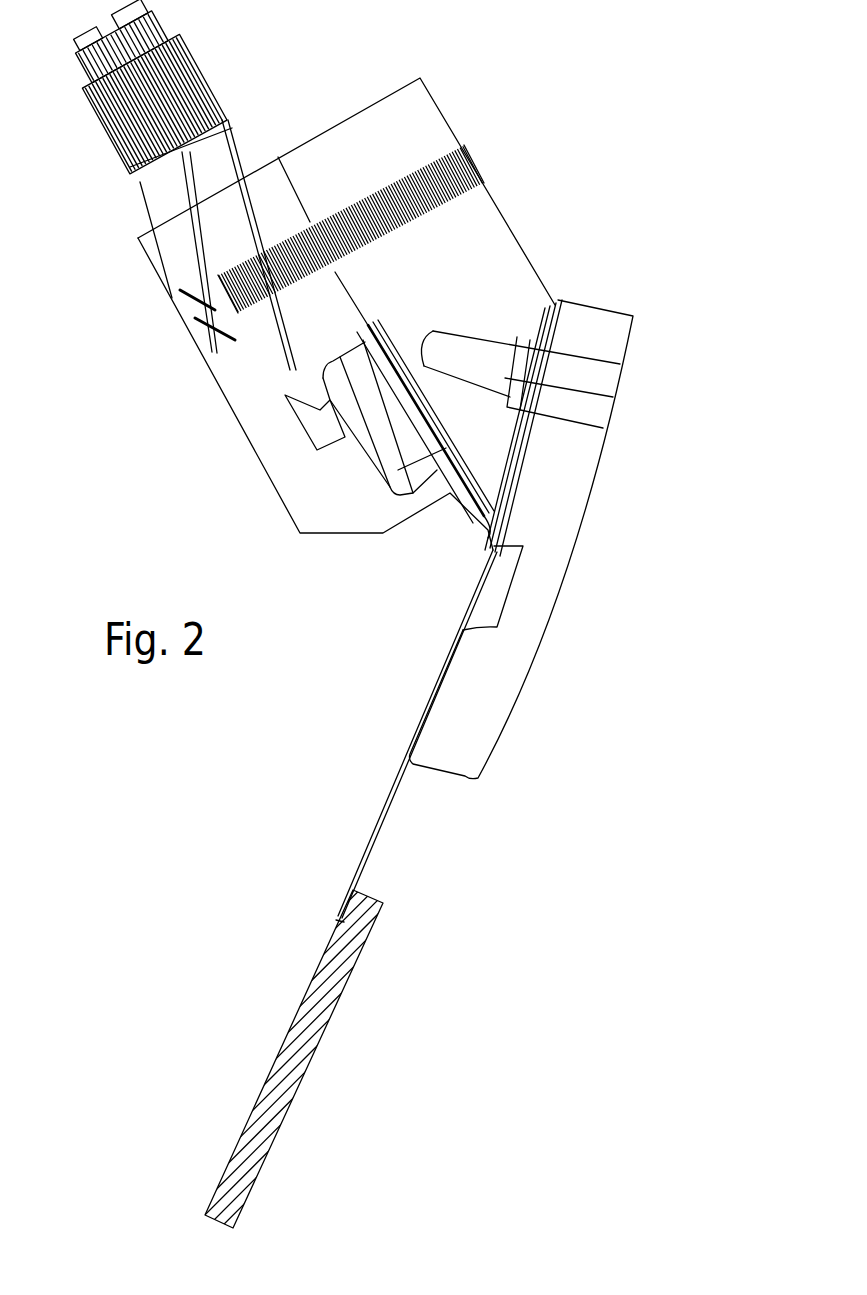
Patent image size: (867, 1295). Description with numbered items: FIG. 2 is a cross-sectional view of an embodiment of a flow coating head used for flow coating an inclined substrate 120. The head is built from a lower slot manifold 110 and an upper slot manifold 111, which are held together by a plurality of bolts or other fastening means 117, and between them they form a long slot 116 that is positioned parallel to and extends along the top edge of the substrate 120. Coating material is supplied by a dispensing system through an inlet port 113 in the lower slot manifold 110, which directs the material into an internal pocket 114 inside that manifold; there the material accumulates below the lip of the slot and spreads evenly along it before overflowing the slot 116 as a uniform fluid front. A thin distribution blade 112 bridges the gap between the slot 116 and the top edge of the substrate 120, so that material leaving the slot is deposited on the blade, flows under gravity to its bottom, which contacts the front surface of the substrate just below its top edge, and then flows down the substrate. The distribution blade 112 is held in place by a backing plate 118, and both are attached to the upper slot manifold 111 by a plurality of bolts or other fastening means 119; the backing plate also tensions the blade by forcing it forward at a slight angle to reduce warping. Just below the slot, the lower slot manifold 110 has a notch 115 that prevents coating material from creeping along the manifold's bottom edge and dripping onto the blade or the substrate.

The lower slot manifold 110 is at (257, 400).
The upper slot manifold 111 is at (480, 292).
The distribution blade 112 is at (333, 888).
The inlet port 113 is at (178, 176).
The internal pocket 114 is at (383, 442).
The notch 115 is at (443, 507).
The slot 116 is at (493, 545).
The bolts or other fastening means 117 is at (475, 174).
The backing plate 118 is at (563, 477).
The bolts or other fastening means 119 is at (590, 381).
The substrate 120 is at (287, 1077).